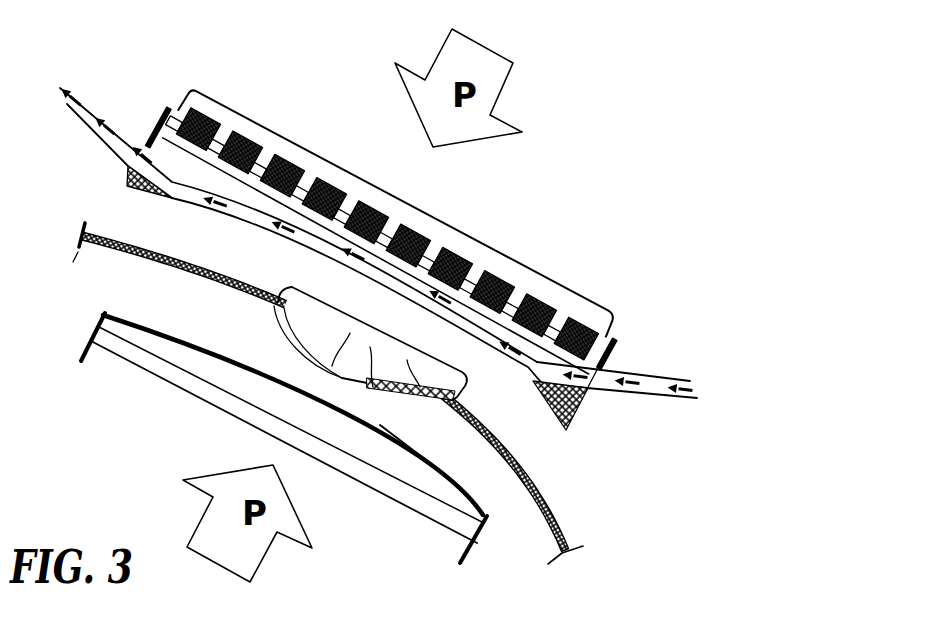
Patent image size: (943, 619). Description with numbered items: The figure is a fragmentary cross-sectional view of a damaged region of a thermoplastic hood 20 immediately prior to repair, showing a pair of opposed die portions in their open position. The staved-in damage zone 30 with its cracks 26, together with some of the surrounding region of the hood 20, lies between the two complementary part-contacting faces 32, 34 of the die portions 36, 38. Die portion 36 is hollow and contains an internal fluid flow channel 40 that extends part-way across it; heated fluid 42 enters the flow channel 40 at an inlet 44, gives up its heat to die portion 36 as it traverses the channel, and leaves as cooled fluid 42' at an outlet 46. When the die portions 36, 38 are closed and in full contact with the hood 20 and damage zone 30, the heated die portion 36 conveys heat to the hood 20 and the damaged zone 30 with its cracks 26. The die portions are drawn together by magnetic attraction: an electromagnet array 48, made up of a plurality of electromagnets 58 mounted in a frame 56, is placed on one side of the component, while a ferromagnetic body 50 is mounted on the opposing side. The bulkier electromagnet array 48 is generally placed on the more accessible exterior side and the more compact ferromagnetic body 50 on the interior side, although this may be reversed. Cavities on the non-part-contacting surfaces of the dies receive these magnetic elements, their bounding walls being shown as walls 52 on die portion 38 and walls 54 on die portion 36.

The hood 20 is at (562, 507).
The cracks 26 is at (340, 378).
The staved-in damage zone 30 is at (393, 346).
The part-contacting face 32 is at (560, 426).
The part-contacting face 34 is at (455, 472).
The die portion 36 is at (518, 344).
The die portion 38 is at (407, 450).
The internal fluid flow channel 40 is at (480, 323).
The heated fluid 42 is at (666, 377).
The cooled fluid 42' is at (107, 86).
The inlet 44 is at (667, 399).
The outlet 46 is at (88, 122).
The electromagnet array 48 is at (425, 212).
The ferromagnetic body 50 is at (183, 389).
The bounding walls 52 is at (87, 348).
The bounding walls 54 is at (144, 118).
The frame 56 is at (220, 141).
The electromagnets 58 is at (288, 157).